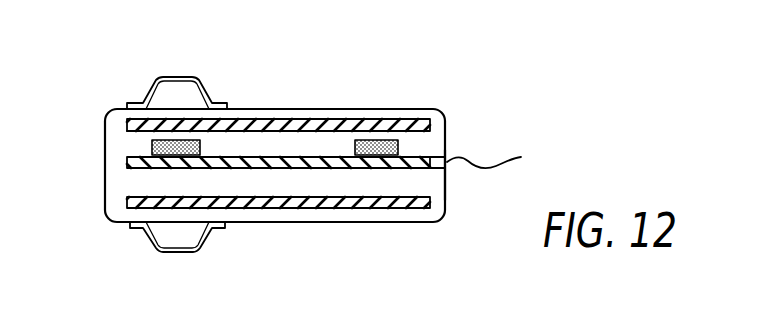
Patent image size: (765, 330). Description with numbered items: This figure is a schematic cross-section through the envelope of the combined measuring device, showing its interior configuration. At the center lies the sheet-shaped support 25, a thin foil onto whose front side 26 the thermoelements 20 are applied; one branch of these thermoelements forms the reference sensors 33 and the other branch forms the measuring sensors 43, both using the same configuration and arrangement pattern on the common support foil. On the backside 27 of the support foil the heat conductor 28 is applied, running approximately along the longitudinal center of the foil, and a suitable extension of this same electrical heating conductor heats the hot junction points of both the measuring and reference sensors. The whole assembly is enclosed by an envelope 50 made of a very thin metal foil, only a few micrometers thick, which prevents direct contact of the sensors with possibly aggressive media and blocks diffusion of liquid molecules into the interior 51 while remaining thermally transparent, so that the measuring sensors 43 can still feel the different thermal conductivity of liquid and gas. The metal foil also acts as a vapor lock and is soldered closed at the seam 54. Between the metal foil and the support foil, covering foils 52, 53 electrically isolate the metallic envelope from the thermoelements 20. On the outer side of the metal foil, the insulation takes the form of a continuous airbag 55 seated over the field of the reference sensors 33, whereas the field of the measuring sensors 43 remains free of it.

The thermoelements 20 is at (133, 146).
The sheet-shaped support 25 is at (435, 163).
The front side 26 is at (425, 160).
The backside 27 is at (388, 167).
The heat conductor 28 is at (150, 173).
The reference sensors 33 is at (201, 146).
The measuring sensors 43 is at (378, 148).
The envelope 50 is at (435, 222).
The interior 51 is at (447, 165).
The covering foil 52 is at (277, 204).
The covering foil 53 is at (340, 121).
The seam 54 is at (500, 157).
The airbag 55 is at (204, 82).